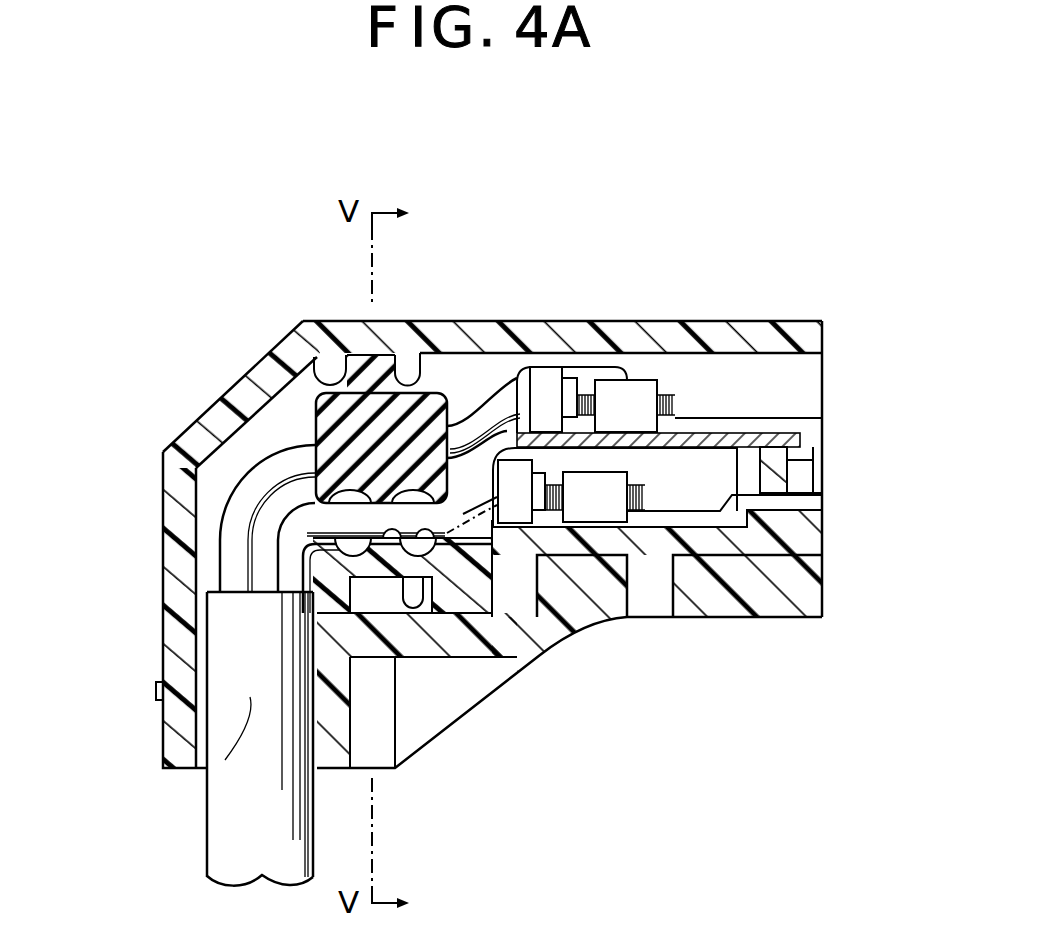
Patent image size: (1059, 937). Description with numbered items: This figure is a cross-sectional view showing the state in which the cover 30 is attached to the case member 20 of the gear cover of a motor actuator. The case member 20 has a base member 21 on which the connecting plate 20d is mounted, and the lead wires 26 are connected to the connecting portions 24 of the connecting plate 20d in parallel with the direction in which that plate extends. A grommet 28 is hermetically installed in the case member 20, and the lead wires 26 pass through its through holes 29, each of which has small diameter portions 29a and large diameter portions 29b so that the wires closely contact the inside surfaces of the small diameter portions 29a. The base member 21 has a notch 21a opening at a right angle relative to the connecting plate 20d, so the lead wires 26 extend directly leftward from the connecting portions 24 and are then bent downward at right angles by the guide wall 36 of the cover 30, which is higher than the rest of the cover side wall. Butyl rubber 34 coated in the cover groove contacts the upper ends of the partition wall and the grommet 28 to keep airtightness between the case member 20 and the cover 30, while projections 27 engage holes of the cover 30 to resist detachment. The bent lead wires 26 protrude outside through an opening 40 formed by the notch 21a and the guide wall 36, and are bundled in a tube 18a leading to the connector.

The tube 18a is at (236, 827).
The case member 20 is at (800, 383).
The connecting plate 20d is at (705, 418).
The base member 21 is at (760, 537).
The notch 21a is at (345, 602).
The connecting portions 24 is at (614, 397).
The lead wires 26 is at (487, 417).
The projections 27 is at (156, 688).
The grommet 28 is at (437, 360).
The through holes 29 is at (575, 765).
The small diameter portions 29a is at (407, 540).
The large diameter portions 29b is at (447, 537).
The cover 30 is at (227, 392).
The butyl rubber 34 is at (371, 357).
The guide wall 36 is at (160, 547).
The opening 40 is at (225, 760).